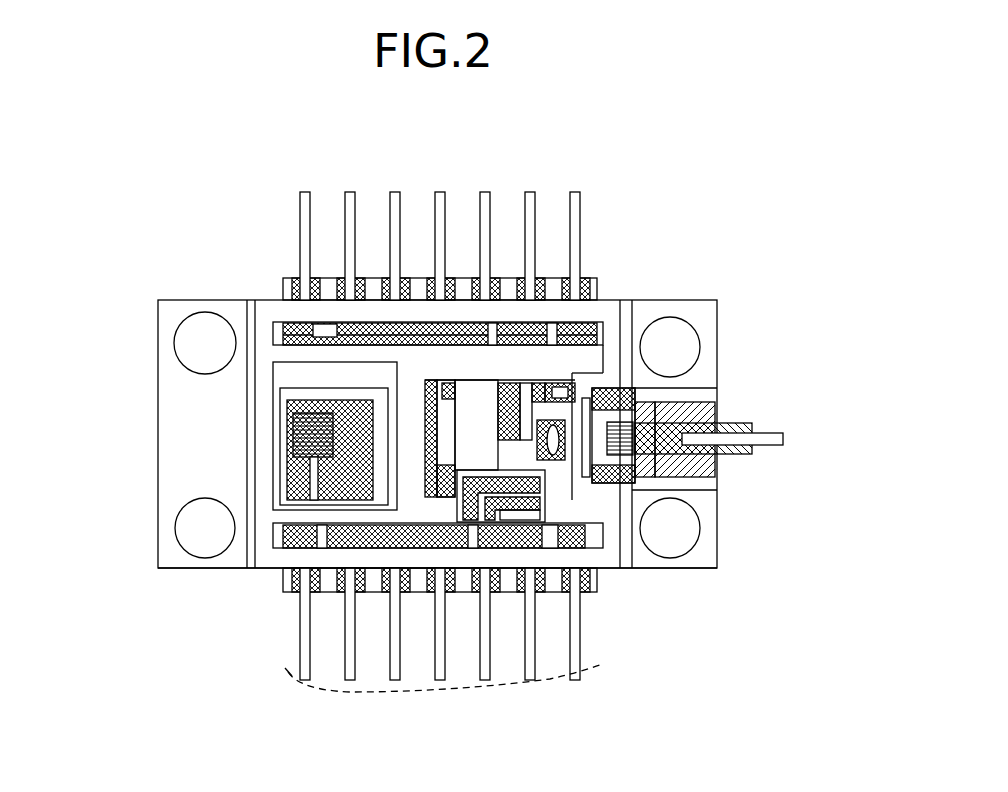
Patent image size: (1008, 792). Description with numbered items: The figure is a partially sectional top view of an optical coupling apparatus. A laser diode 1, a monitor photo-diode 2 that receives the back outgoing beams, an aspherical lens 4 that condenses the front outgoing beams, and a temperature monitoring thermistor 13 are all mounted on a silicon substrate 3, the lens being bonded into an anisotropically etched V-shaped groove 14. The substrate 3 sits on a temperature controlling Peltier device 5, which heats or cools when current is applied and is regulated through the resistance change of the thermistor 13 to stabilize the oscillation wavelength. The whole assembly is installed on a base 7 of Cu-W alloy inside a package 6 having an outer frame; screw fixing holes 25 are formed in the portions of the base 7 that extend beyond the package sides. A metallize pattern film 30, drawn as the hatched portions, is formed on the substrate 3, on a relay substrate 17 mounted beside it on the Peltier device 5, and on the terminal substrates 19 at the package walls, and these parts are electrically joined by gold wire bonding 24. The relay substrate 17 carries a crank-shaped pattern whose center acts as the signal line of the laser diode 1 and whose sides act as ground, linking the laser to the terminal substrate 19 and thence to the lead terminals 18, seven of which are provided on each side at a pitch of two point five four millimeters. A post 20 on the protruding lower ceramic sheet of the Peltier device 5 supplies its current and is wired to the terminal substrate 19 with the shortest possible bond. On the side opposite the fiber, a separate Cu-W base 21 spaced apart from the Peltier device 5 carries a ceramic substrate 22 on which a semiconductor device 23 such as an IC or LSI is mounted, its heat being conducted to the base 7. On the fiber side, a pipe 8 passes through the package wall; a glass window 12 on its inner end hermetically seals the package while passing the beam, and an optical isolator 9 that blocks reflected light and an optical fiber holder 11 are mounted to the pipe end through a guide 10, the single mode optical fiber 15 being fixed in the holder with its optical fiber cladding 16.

The laser diode 1 is at (527, 382).
The monitor photo-diode 2 is at (501, 380).
The substrate 3 is at (550, 495).
The aspherical lens 4 is at (560, 400).
The temperature controlling Peltier device 5 is at (470, 457).
The package 6 is at (252, 535).
The base 7 is at (175, 393).
The pipe 8 is at (618, 458).
The optical isolator 9 is at (632, 485).
The guide 10 is at (690, 403).
The optical fiber holder 11 is at (728, 425).
The glass window 12 is at (587, 478).
The temperature monitoring thermistor 13 is at (550, 382).
The V-shaped groove 14 is at (560, 425).
The optical fiber 15 is at (662, 400).
The optical fiber cladding 16 is at (760, 447).
The relay substrate 17 is at (518, 520).
The lead terminal 18 is at (354, 695).
The terminal substrate 19 is at (300, 333).
The post 20 is at (428, 380).
The base 21 is at (368, 370).
The ceramic substrate 22 is at (298, 395).
The semiconductor device 23 is at (300, 405).
The wire bonding 24 is at (292, 512).
The screw fixing holes 25 is at (202, 328).
The metallize pattern film 30 is at (447, 380).